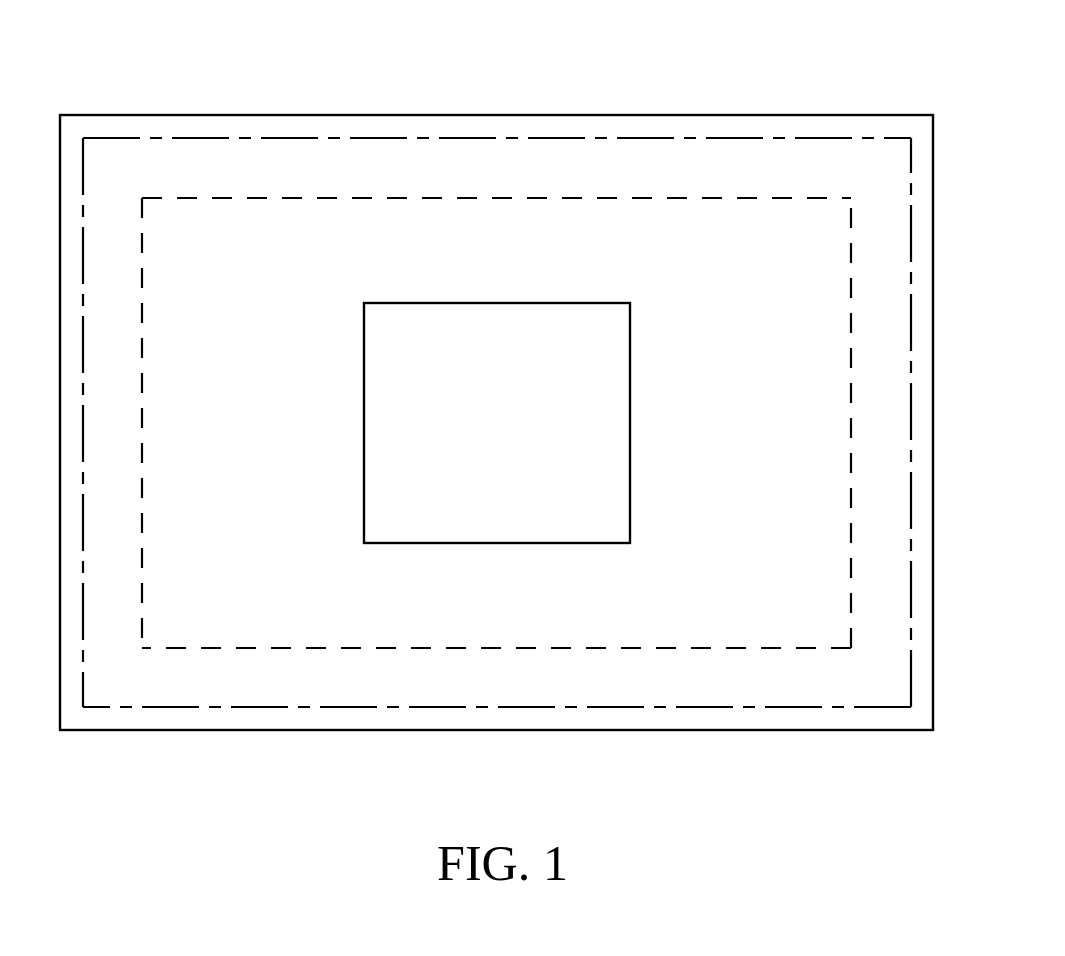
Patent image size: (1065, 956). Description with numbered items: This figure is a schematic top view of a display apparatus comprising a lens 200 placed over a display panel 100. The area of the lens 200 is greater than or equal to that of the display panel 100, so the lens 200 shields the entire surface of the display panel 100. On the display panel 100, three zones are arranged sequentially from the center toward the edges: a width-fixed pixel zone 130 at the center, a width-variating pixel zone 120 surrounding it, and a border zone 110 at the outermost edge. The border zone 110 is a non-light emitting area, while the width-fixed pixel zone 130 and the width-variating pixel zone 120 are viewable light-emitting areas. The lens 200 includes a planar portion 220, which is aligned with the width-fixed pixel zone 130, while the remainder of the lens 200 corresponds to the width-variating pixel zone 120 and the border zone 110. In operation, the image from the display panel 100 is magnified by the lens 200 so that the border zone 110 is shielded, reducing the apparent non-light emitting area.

The display panel 100 is at (913, 602).
The border zone 110 is at (854, 171).
The width-variating pixel zone 120 is at (766, 434).
The width-fixed pixel zone 130 is at (511, 481).
The lens 200 is at (663, 113).
The planar portion 220 is at (511, 376).